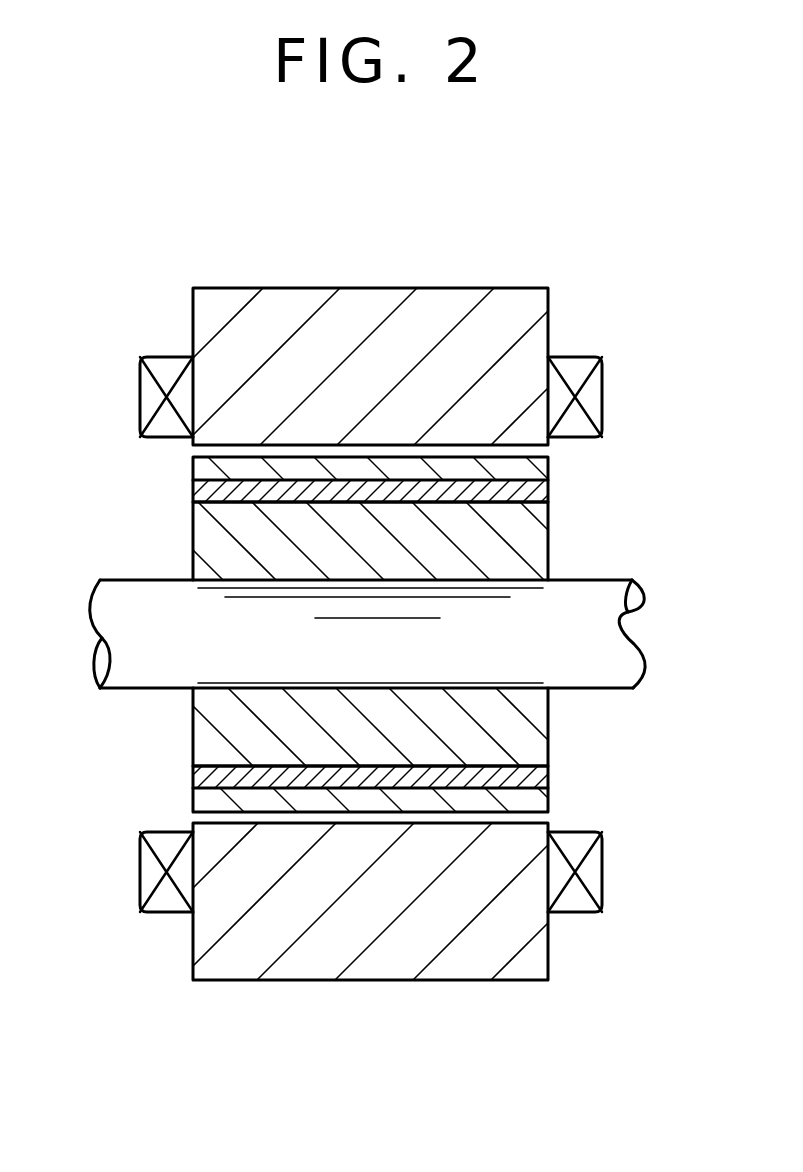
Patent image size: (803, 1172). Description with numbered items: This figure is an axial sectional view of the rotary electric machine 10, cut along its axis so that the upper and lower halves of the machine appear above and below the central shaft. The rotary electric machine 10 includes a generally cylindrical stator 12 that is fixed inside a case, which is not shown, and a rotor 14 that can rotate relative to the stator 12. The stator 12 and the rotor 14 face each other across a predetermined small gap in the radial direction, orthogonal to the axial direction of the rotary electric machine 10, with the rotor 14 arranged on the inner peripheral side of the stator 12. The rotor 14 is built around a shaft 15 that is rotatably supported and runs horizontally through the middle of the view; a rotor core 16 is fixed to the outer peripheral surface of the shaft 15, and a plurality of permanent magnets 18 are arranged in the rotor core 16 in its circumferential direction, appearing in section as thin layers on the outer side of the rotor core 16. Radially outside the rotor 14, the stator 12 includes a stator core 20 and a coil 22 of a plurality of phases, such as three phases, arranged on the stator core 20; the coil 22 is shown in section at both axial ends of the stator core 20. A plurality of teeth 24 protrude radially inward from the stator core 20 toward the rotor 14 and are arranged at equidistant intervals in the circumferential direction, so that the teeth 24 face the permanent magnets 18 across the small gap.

The rotary electric machine 10 is at (549, 243).
The stator 12 is at (317, 276).
The rotor 14 is at (560, 521).
The shaft 15 is at (135, 580).
The rotor core 16 is at (530, 550).
The permanent magnets 18 is at (548, 483).
The stator core 20 is at (396, 300).
The coil 22 is at (140, 392).
The teeth 24 is at (222, 448).